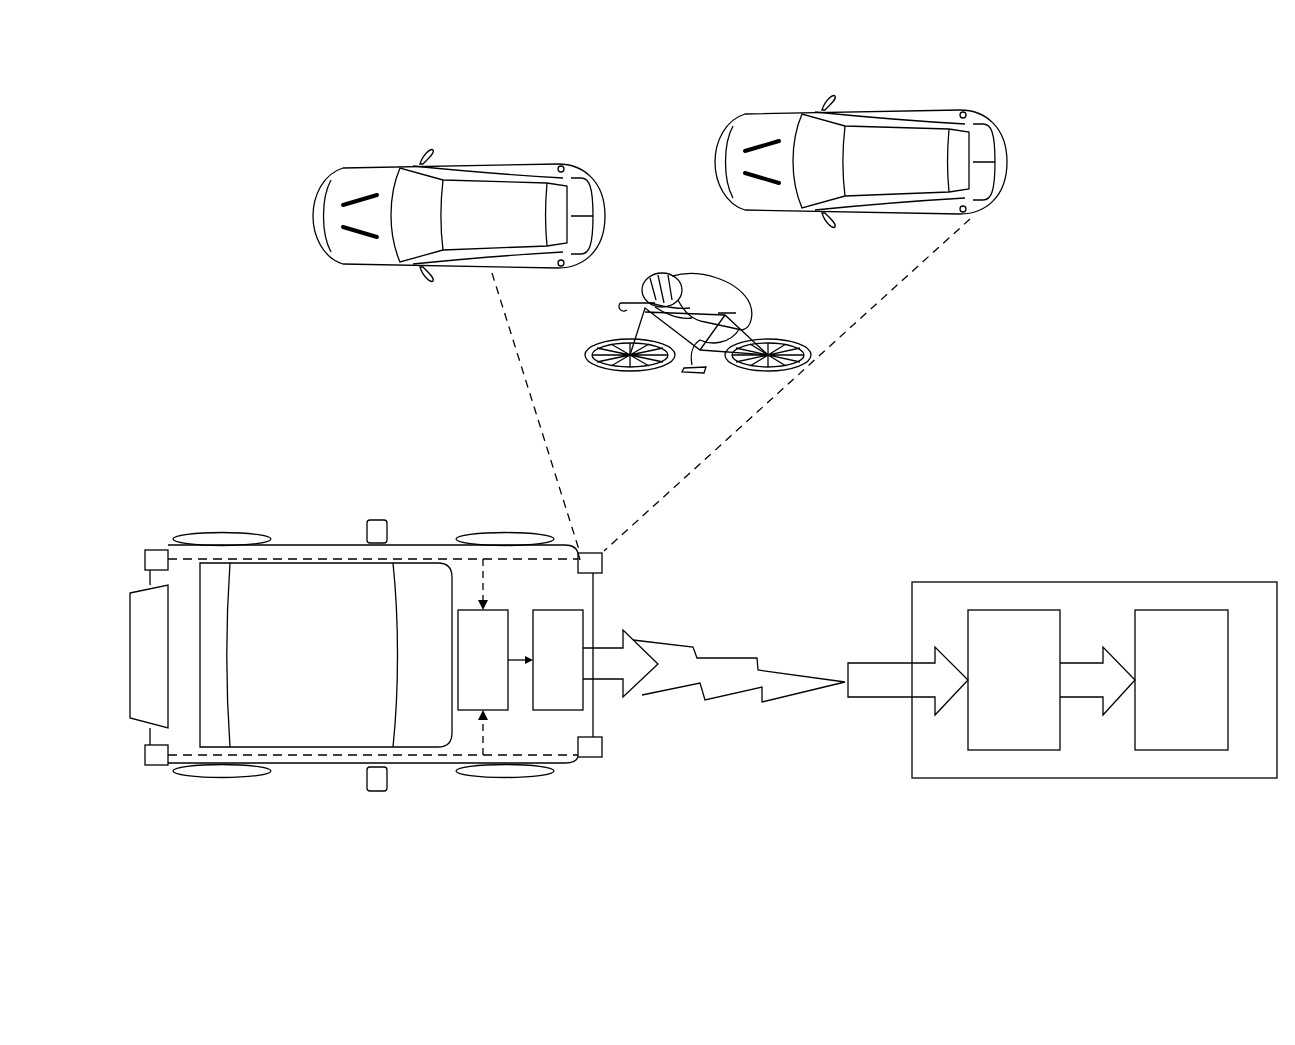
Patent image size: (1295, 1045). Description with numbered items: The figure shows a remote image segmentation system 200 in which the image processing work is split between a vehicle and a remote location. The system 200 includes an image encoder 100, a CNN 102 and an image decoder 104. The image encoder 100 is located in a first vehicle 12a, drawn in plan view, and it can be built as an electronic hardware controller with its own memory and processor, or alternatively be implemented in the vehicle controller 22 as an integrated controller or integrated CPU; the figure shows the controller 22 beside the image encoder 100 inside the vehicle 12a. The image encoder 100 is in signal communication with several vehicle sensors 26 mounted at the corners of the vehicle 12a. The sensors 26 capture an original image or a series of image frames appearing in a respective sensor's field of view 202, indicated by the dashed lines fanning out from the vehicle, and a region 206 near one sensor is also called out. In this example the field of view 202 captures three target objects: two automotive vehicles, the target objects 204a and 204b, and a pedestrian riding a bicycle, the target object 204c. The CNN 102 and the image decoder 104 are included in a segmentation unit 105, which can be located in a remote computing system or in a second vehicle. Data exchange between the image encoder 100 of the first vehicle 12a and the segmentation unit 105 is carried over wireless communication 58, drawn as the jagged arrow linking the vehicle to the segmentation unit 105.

The first vehicle 12a is at (322, 541).
The vehicle sensors 26 is at (157, 550).
The vehicle controller 22 is at (497, 648).
The image encoder 100 is at (579, 648).
The wireless communication 58 is at (722, 656).
The segmentation unit 105 is at (1102, 568).
The CNN 102 is at (1036, 653).
The image decoder 104 is at (1203, 653).
The remote image segmentation system 200 is at (765, 804).
The field of view 202 is at (513, 348).
The target object 204a is at (500, 158).
The target object 204b is at (917, 107).
The target object 204c is at (717, 285).
The vehicle body region 206 is at (508, 566).